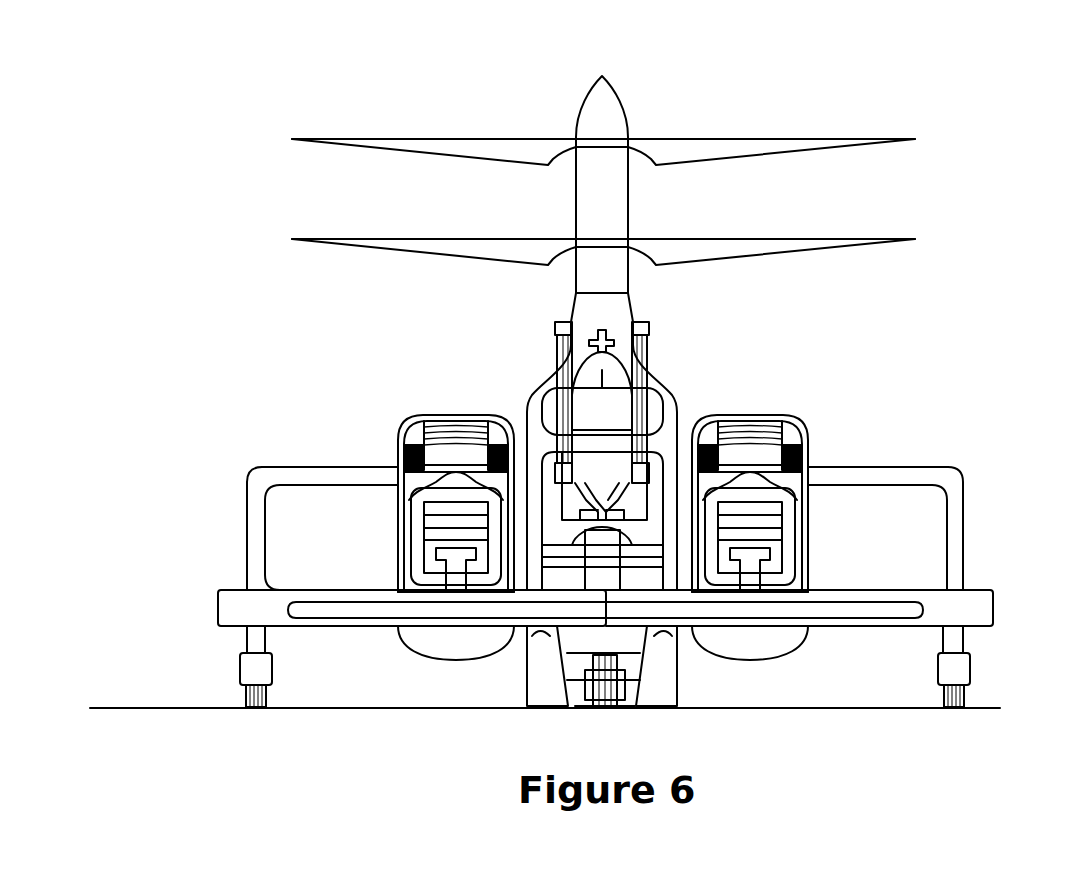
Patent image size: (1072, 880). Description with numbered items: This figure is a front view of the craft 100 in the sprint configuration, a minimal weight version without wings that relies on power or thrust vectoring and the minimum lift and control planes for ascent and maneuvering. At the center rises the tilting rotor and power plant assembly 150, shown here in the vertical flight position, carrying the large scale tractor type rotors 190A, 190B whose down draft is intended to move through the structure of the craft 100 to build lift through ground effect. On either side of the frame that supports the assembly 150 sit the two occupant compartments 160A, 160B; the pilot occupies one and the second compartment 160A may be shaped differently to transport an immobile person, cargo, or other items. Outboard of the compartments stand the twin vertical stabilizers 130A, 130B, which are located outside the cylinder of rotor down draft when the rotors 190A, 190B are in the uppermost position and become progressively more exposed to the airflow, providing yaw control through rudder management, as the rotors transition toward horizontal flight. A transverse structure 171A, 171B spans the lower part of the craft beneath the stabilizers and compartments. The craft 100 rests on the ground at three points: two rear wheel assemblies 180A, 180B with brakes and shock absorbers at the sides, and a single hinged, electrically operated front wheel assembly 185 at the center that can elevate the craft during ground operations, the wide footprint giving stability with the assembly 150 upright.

The craft 100 is at (140, 640).
The vertical stabilizer 130A is at (243, 518).
The vertical stabilizer 130B is at (948, 467).
The tilting rotor and power plant assembly 150 is at (576, 200).
The occupant compartment 160A is at (395, 430).
The occupant compartment 160B is at (800, 432).
The left wing spar 171A is at (218, 596).
The right wing spar 171B is at (993, 597).
The wheel assembly 180A is at (243, 690).
The wheel assembly 180B is at (968, 690).
The front wheel assembly 185 is at (570, 672).
The rotor 190A is at (385, 239).
The rotor 190B is at (372, 139).